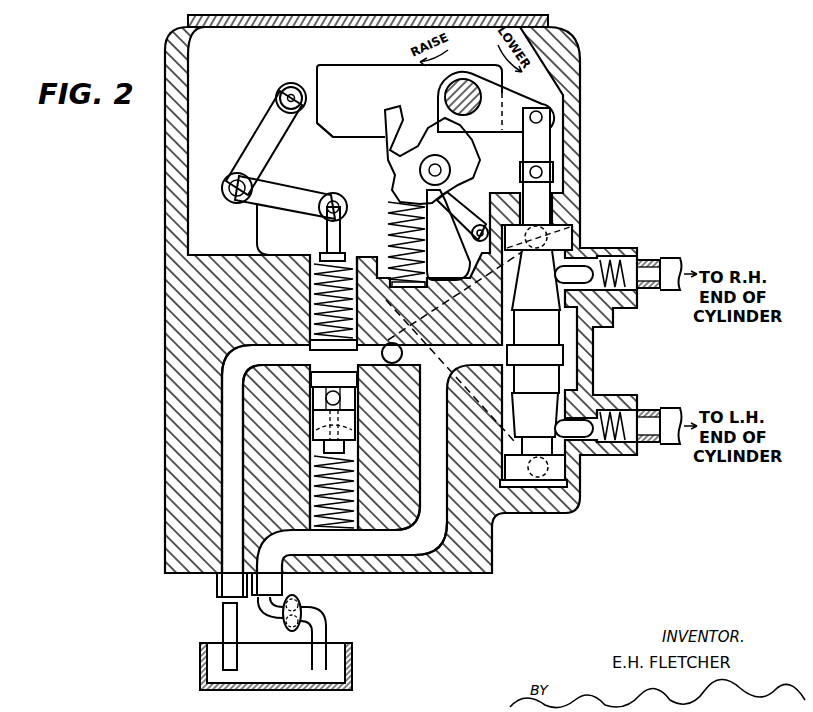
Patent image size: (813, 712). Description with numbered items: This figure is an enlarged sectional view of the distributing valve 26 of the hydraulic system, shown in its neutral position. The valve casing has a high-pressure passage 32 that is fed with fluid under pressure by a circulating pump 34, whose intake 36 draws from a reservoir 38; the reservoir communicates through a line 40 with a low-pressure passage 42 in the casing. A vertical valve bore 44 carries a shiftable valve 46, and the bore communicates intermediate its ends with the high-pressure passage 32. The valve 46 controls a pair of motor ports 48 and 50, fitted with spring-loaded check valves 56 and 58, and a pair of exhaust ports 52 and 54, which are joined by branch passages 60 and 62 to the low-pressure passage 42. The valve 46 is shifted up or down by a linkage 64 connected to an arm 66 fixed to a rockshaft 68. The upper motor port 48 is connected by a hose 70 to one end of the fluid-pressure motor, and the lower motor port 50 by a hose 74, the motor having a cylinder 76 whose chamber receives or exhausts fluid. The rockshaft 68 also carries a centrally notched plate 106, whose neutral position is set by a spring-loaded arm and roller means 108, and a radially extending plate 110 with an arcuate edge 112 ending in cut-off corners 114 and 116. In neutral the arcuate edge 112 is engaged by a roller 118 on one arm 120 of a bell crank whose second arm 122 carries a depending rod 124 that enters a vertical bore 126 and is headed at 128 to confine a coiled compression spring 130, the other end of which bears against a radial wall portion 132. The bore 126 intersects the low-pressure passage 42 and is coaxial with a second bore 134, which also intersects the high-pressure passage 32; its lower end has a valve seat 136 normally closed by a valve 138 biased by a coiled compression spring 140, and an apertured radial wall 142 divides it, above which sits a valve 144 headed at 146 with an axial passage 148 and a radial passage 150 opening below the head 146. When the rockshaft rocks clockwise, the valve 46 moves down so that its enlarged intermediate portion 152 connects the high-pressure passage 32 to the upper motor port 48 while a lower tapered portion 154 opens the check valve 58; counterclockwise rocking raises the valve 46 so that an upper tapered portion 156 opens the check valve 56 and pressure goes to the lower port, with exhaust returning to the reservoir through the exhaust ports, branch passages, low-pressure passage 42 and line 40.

The distributing valve 26 is at (168, 477).
The high-pressure passage 32 is at (410, 557).
The circulating pump 34 is at (302, 604).
The intake 36 is at (328, 627).
The reservoir 38 is at (291, 682).
The line 40 is at (222, 620).
The low-pressure passage 42 is at (232, 540).
The valve bore 44 is at (564, 240).
The shiftable valve 46 is at (562, 346).
The upper motor port 48 is at (652, 260).
The lower motor port 50 is at (612, 441).
The exhaust port 52 is at (567, 232).
The exhaust port 54 is at (582, 484).
The spring-loaded check valve 56 is at (606, 264).
The spring-loaded check valve 58 is at (592, 442).
The branch passage 60 is at (457, 235).
The branch passage 62 is at (454, 359).
The linkage 64 is at (550, 146).
The arm 66 is at (512, 100).
The rockshaft 68 is at (461, 88).
The hose 70 is at (674, 272).
The hose 74 is at (667, 410).
The cylinder 76 is at (729, 399).
The centrally notched plate 106 is at (427, 113).
The spring-loaded arm and roller means 108 is at (422, 173).
The radially extending plate 110 is at (357, 68).
The arcuate edge 112 is at (308, 80).
The cut-off corner 114 is at (330, 66).
The cut-off corner 116 is at (321, 131).
The roller 118 is at (279, 92).
The bell crank arm 120 is at (264, 125).
The bell crank arm 122 is at (278, 200).
The rod 124 is at (327, 232).
The vertical bore 126 is at (357, 268).
The head 128 is at (330, 350).
The coiled compression spring 130 is at (318, 320).
The radial wall portion 132 is at (320, 256).
The second bore 134 is at (358, 401).
The valve seat 136 is at (318, 530).
The valve 138 is at (350, 531).
The coiled compression spring 140 is at (360, 478).
The apertured radial wall 142 is at (356, 435).
The valve 144 is at (316, 426).
The head 146 is at (311, 383).
The axial passage 148 is at (322, 446).
The radial passage 150 is at (318, 400).
The enlarged intermediate portion 152 is at (566, 360).
The lower tapered portion 154 is at (547, 415).
The upper tapered portion 156 is at (542, 302).